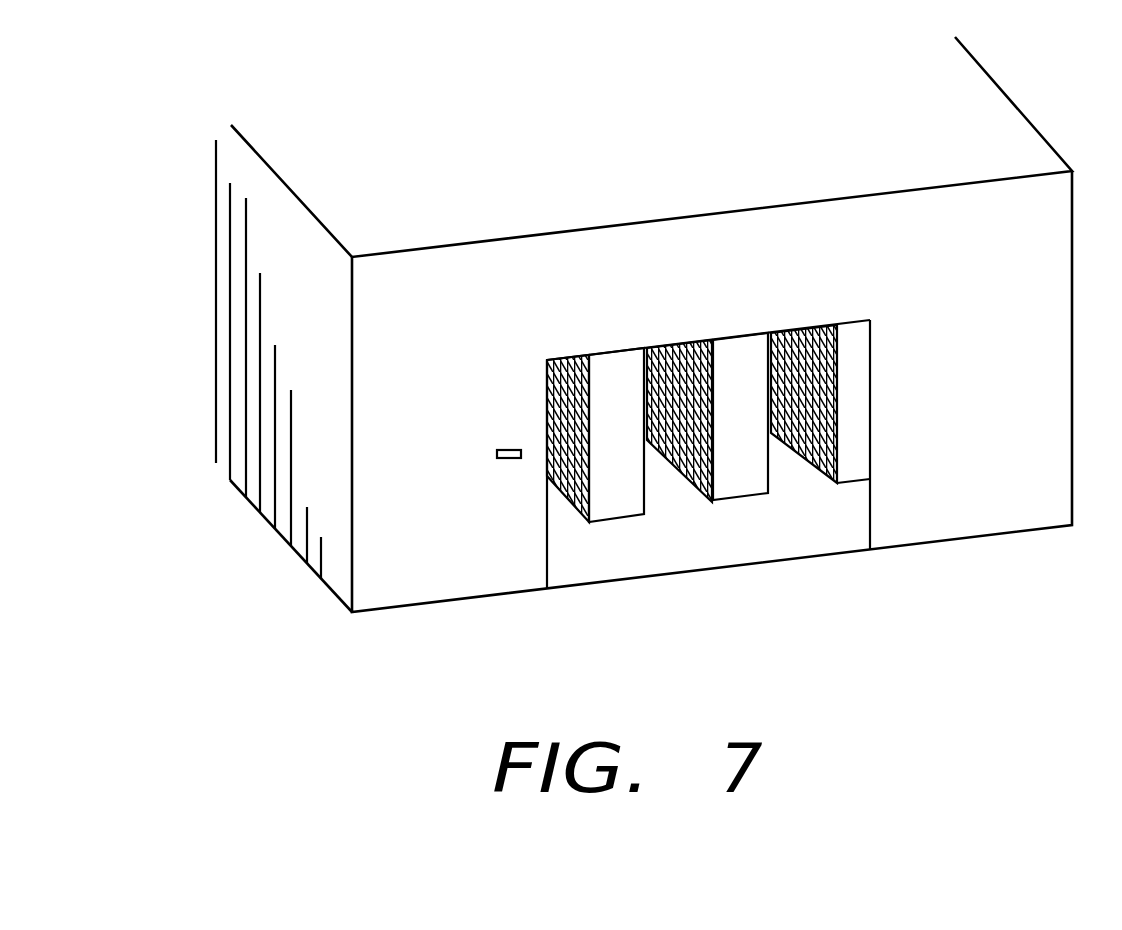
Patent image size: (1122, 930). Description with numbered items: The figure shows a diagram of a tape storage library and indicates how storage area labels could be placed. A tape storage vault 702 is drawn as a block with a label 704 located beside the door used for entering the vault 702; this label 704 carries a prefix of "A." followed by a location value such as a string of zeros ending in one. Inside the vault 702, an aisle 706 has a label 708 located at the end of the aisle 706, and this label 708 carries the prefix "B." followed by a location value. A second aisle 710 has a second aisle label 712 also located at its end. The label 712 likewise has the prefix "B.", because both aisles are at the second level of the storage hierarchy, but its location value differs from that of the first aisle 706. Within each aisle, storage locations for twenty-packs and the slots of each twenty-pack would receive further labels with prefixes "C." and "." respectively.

The tape storage vault 702 is at (928, 542).
The label 704 is at (508, 450).
The aisle 706 is at (562, 523).
The label 708 is at (622, 408).
The second aisle 710 is at (675, 500).
The second aisle label 712 is at (745, 392).